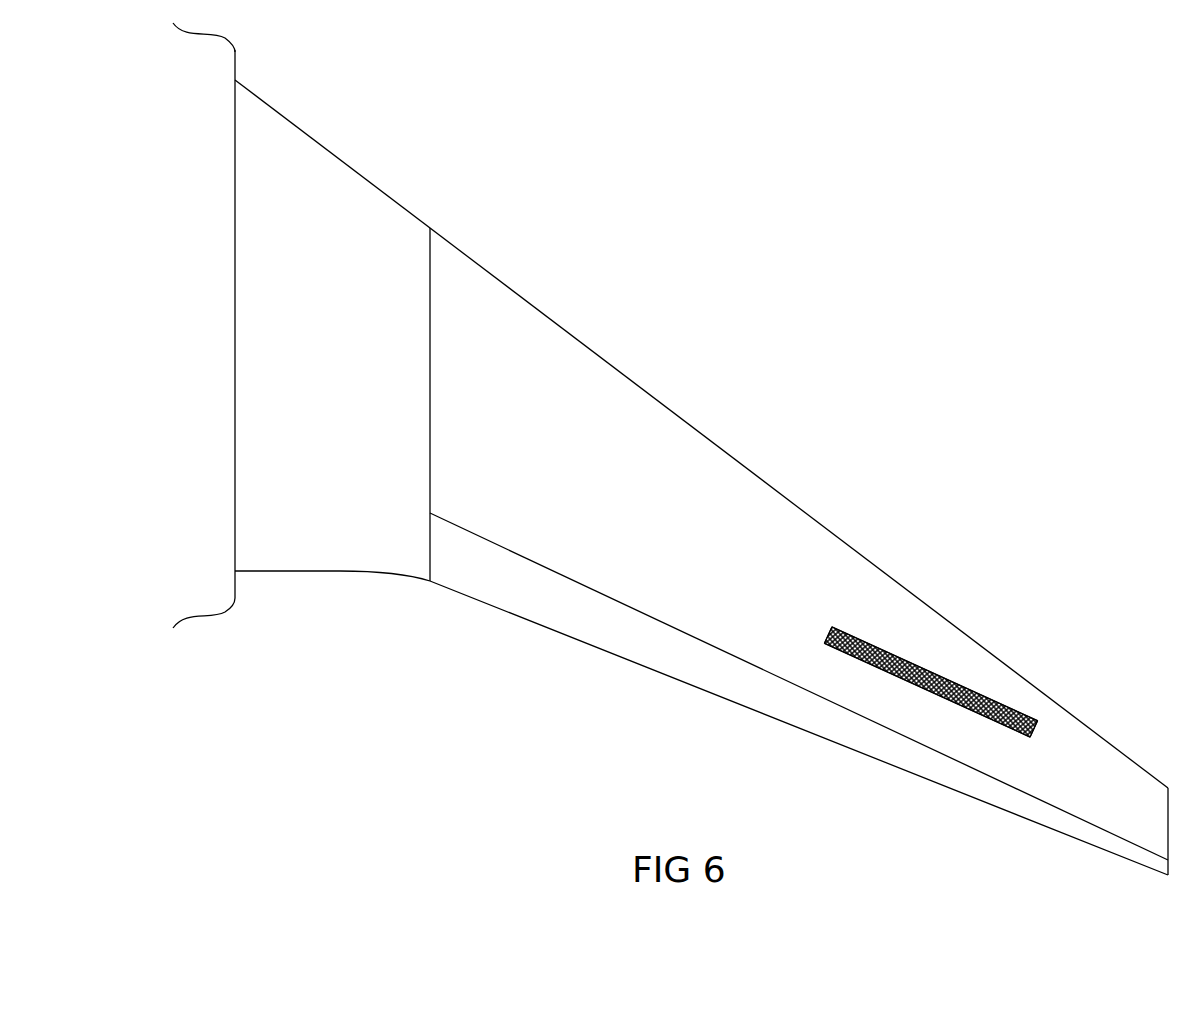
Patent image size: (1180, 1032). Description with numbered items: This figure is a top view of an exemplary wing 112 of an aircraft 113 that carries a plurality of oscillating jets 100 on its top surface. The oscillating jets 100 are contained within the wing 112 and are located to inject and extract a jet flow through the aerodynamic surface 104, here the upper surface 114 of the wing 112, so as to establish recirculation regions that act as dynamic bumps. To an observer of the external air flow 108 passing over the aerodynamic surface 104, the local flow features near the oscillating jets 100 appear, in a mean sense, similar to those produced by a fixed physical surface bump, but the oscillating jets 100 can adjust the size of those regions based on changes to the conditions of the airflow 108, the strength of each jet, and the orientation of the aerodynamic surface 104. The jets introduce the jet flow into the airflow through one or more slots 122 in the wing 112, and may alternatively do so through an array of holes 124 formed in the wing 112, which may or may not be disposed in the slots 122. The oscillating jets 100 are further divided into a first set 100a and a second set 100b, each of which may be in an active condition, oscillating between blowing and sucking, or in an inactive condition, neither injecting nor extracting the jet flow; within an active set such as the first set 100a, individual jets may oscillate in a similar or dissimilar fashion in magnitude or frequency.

The external air flow 108 is at (620, 195).
The wing 112 is at (258, 256).
The aircraft 113 is at (425, 629).
The upper surface 114 is at (694, 457).
The aerodynamic surface 104 is at (872, 617).
The oscillating jets 100 is at (959, 656).
The first set 100a is at (833, 648).
The second set 100b is at (1013, 702).
The slots 122 is at (908, 657).
The array of holes 124 is at (962, 710).